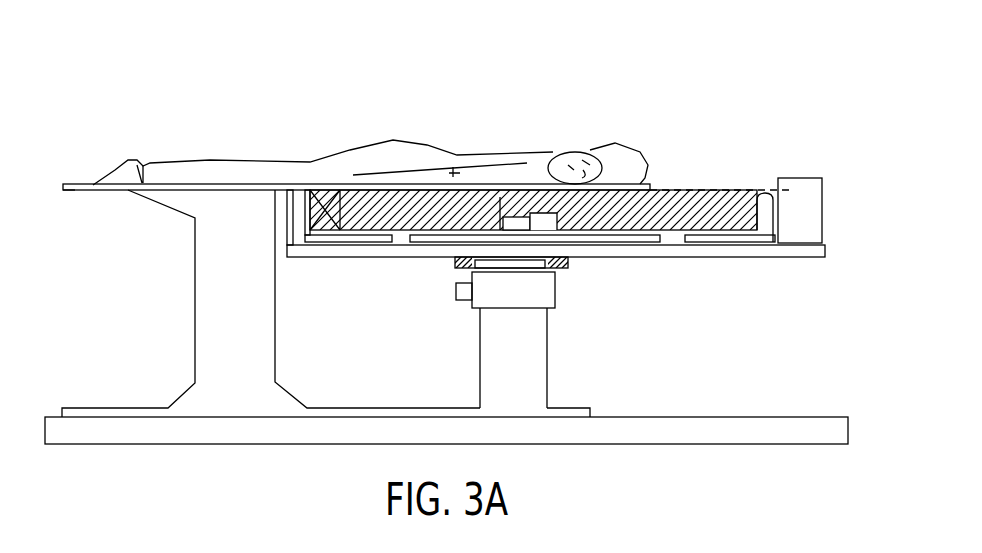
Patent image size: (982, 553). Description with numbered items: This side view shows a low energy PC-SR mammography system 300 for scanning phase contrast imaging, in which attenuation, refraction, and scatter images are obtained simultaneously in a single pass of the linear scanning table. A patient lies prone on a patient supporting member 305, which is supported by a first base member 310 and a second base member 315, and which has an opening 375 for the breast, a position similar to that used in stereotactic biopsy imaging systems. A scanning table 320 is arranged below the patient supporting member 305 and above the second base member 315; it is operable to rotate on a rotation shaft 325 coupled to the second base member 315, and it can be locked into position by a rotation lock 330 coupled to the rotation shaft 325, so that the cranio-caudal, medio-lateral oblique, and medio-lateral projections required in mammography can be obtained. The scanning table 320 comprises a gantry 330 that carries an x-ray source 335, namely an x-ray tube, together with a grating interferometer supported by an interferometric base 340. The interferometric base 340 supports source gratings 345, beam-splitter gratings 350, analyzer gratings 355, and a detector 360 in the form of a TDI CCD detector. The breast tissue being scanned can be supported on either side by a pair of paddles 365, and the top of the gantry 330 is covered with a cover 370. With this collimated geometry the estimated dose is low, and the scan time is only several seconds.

The low energy PC-SR mammography system 300 is at (210, 69).
The patient supporting member 305 is at (66, 193).
The first base member 310 is at (208, 332).
The second base member 315 is at (532, 375).
The scanning table 320 is at (455, 257).
The rotation shaft 325 is at (560, 300).
The gantry 330 is at (668, 242).
The x-ray source 335 is at (807, 178).
The interferometric base 340 is at (600, 180).
The source gratings 345 is at (762, 192).
The beam-splitter gratings 350 is at (550, 183).
The analyzer gratings 355 is at (362, 217).
The detector 360 is at (290, 238).
The paddles 365 is at (480, 190).
The cover 370 is at (703, 190).
The opening 375 is at (515, 222).